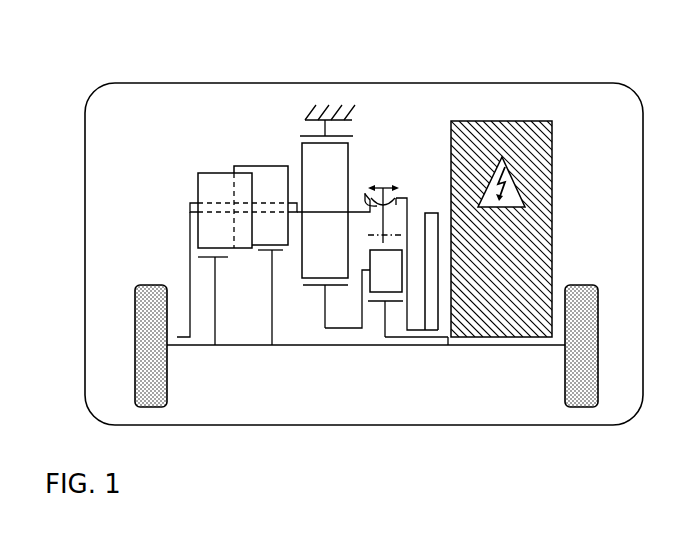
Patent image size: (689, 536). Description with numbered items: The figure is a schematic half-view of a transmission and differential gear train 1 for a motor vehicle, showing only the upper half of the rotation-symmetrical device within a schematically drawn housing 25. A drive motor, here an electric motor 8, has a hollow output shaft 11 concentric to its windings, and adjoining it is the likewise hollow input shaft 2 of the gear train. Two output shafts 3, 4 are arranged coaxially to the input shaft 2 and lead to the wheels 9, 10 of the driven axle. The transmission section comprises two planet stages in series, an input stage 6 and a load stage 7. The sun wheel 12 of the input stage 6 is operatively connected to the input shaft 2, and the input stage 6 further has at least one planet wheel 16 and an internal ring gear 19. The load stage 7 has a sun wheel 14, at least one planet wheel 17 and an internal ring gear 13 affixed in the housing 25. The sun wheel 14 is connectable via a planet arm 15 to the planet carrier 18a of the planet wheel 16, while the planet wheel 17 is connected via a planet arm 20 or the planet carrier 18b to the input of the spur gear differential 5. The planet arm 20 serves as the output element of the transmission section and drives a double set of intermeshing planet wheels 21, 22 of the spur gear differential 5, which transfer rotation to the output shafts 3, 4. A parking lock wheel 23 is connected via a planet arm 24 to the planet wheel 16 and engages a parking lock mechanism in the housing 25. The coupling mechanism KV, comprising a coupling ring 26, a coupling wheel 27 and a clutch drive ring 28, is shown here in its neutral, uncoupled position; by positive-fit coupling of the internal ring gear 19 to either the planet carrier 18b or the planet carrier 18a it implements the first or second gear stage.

The transmission and differential gear train 1 is at (160, 100).
The input shaft 2 is at (405, 337).
The output shaft 3 is at (292, 345).
The output shaft 4 is at (200, 345).
The spur gear differential 5 is at (202, 193).
The input stage 6 is at (385, 357).
The load stage 7 is at (327, 357).
The electric motor 8 is at (542, 172).
The wheel 9 is at (145, 297).
The wheel 10 is at (587, 323).
The output shaft 11 is at (448, 337).
The sun wheel 12 is at (385, 322).
The internal ring gear 13 is at (318, 136).
The sun wheel 14 is at (325, 308).
The planet arm 15 is at (335, 328).
The planet wheel 16 is at (388, 258).
The planet wheel 17 is at (340, 157).
The planet carrier 18a is at (387, 272).
The planet carrier 18b is at (352, 212).
The internal ring gear 19 is at (390, 242).
The planet arm 20 is at (298, 212).
The planet wheel 21 is at (265, 177).
The planet wheel 22 is at (215, 183).
The parking lock wheel 23 is at (432, 277).
The planet arm 24 is at (408, 307).
The housing 25 is at (315, 117).
The coupling ring 26 is at (390, 203).
The coupling wheel 27 is at (408, 228).
The clutch drive ring 28 is at (365, 200).
The coupling mechanism KV is at (388, 135).